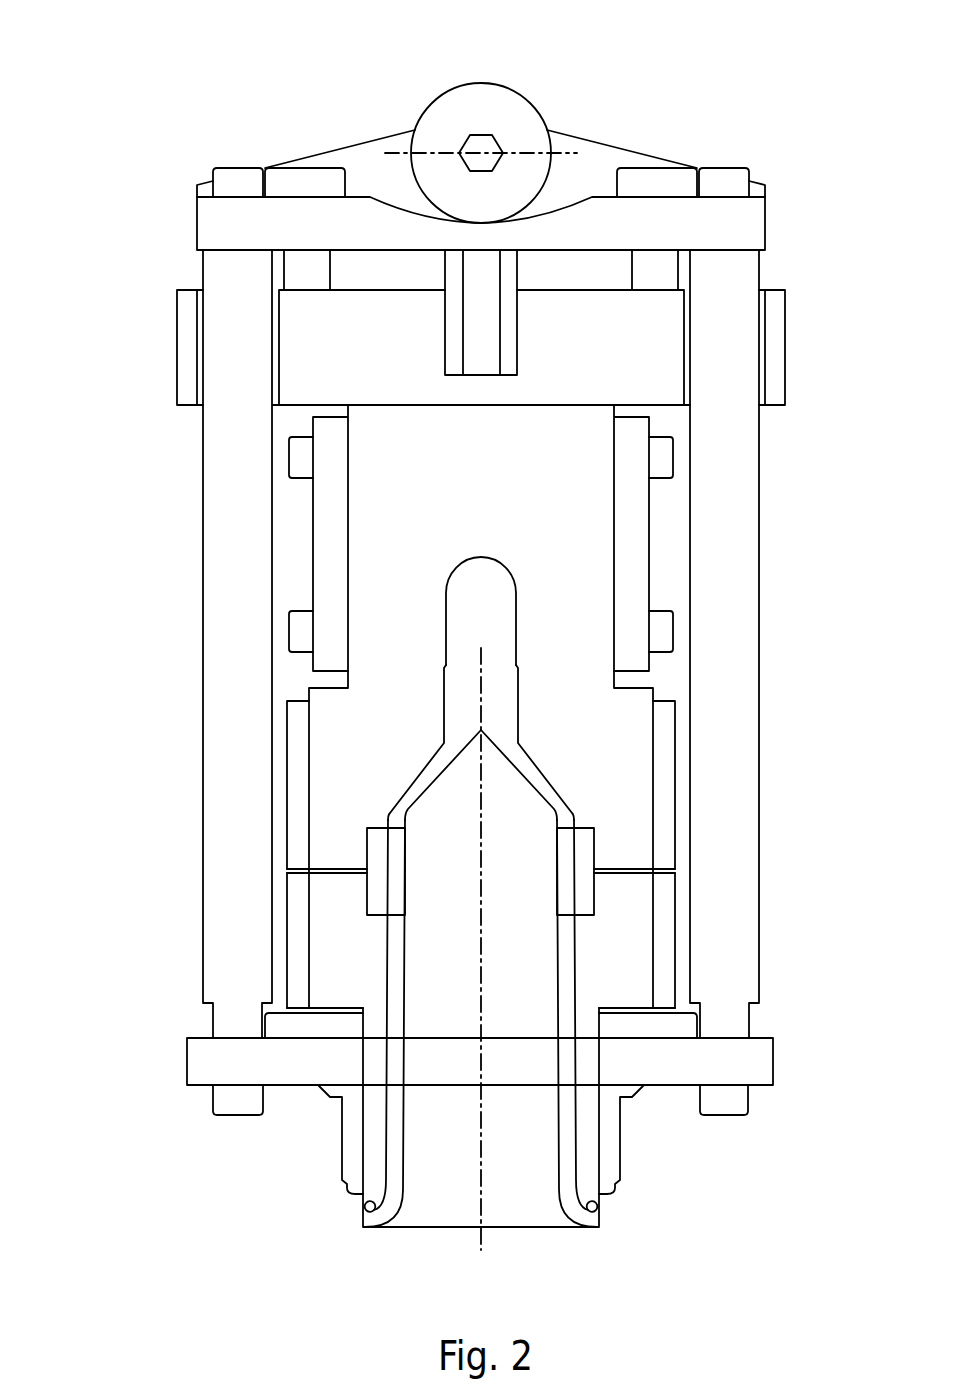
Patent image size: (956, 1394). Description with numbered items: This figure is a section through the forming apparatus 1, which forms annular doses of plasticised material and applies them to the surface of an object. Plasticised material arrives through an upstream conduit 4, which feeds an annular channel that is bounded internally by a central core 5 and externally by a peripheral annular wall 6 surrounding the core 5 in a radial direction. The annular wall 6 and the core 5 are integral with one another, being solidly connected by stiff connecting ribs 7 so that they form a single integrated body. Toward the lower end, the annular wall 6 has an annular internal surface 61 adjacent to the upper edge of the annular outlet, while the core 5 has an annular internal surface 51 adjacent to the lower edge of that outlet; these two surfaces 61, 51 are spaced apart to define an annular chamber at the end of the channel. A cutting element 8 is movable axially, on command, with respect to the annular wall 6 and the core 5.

The forming apparatus 1 is at (130, 100).
The conduit 4 is at (480, 580).
The core 5 is at (533, 970).
The annular internal surface of the core 51 is at (598, 1212).
The annular wall 6 is at (347, 958).
The annular internal surface of the annular wall 61 is at (362, 1210).
The connecting ribs 7 is at (565, 848).
The cutting element 8 is at (353, 1143).